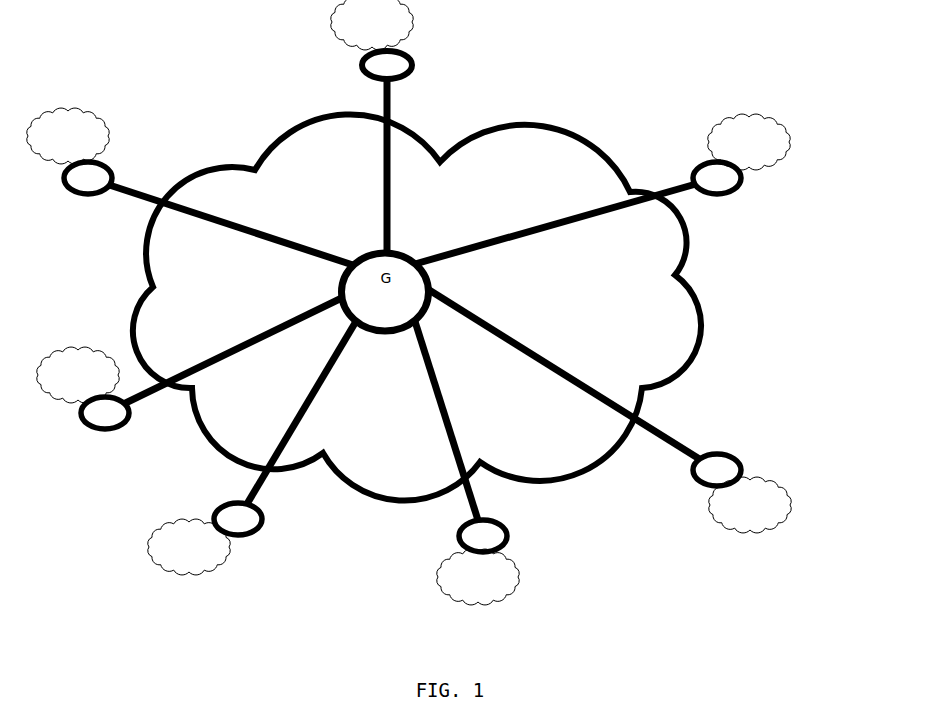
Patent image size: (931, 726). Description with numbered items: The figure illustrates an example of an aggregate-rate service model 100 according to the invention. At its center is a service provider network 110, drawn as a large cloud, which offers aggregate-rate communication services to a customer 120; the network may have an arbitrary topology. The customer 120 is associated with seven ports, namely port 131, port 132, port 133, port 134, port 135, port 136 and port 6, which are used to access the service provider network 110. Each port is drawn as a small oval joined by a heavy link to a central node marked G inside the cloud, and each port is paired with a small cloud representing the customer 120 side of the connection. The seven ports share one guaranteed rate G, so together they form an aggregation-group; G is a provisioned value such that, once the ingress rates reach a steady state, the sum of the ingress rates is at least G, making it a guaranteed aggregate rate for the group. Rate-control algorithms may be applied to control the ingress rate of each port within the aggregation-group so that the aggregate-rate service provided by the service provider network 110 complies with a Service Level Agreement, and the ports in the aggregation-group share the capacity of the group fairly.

The aggregate-rate service model 100 is at (765, 72).
The service provider network 110 is at (417, 307).
The customer 120 is at (409, 302).
The port 6 is at (387, 65).
The port 131 is at (717, 178).
The port 132 is at (717, 470).
The port 133 is at (483, 536).
The port 134 is at (238, 519).
The port 135 is at (105, 413).
The port 136 is at (88, 178).